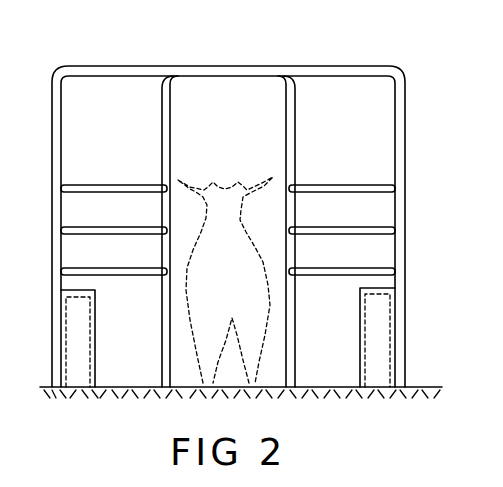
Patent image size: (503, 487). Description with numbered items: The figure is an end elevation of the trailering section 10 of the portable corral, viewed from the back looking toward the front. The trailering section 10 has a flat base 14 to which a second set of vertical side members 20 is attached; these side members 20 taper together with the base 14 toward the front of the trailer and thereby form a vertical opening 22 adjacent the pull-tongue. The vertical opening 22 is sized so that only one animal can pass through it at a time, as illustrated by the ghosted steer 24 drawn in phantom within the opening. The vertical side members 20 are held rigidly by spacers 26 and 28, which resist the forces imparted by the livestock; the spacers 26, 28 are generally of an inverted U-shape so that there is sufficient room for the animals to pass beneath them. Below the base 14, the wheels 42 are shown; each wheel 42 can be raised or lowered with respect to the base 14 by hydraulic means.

The trailering section 10 is at (418, 64).
The spacer 28 is at (400, 125).
The spacer 26 is at (171, 109).
The second set of vertical side members 20 is at (129, 185).
The vertical opening 22 is at (239, 167).
The ghosted steer 24 is at (252, 302).
The wheel 42 is at (82, 328).
The base 14 is at (330, 384).